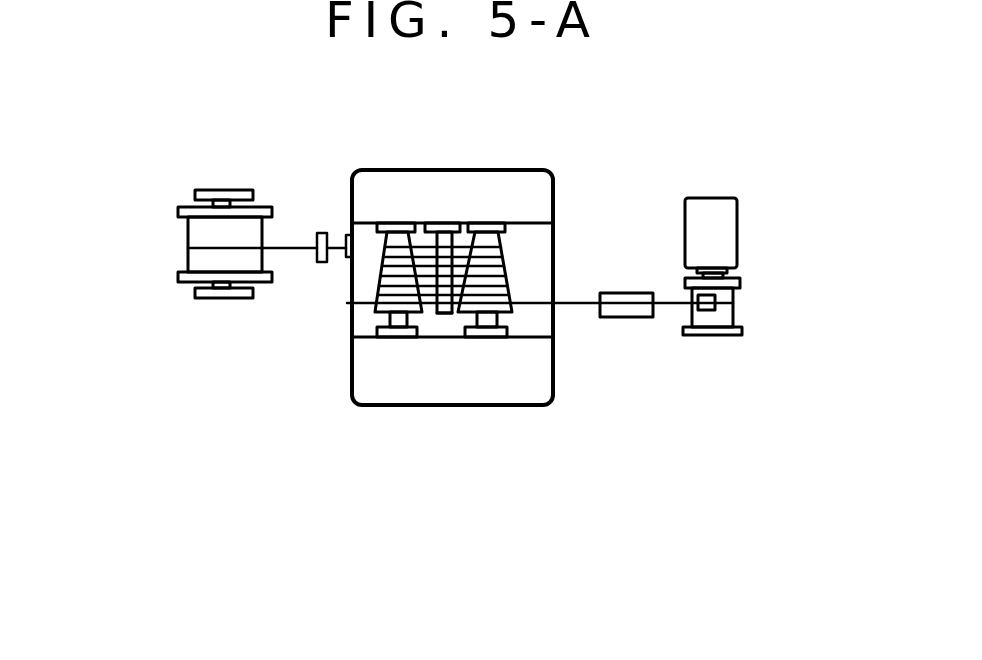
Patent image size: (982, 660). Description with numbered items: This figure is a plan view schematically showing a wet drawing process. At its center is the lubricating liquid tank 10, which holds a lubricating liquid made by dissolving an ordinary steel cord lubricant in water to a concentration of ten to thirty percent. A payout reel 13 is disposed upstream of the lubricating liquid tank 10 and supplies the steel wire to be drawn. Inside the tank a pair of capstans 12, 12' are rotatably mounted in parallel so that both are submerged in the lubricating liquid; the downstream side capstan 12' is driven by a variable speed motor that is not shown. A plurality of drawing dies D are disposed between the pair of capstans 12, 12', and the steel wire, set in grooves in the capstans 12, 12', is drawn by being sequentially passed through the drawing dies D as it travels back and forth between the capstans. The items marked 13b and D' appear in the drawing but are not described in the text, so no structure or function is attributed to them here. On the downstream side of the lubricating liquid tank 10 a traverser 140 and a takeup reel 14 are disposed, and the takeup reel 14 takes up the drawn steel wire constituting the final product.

The lubricating liquid tank 10 is at (404, 173).
The capstan 12 is at (338, 295).
The downstream side capstan 12' is at (554, 237).
The drawing dies D is at (458, 193).
The intermediate shaft lower end D' is at (357, 374).
The payout reel 13 is at (195, 233).
The housing corner portion 13b is at (542, 172).
The takeup reel 14 is at (735, 315).
The traverser 140 is at (737, 282).